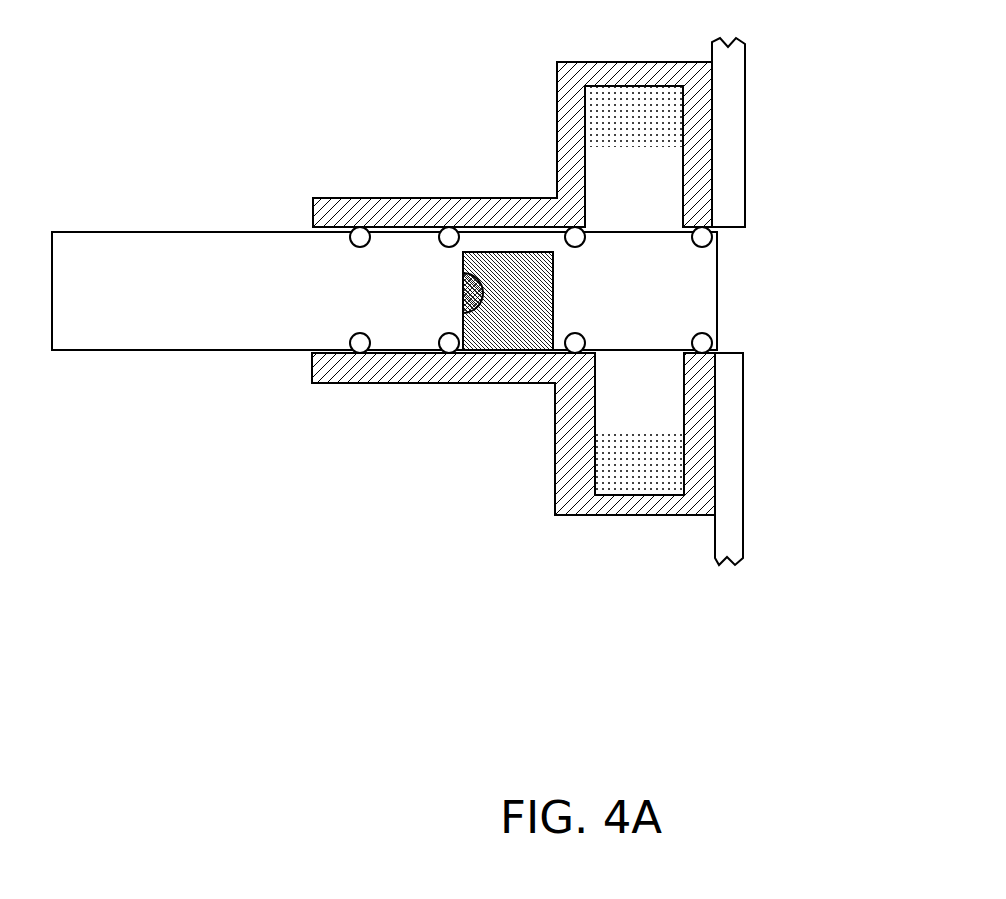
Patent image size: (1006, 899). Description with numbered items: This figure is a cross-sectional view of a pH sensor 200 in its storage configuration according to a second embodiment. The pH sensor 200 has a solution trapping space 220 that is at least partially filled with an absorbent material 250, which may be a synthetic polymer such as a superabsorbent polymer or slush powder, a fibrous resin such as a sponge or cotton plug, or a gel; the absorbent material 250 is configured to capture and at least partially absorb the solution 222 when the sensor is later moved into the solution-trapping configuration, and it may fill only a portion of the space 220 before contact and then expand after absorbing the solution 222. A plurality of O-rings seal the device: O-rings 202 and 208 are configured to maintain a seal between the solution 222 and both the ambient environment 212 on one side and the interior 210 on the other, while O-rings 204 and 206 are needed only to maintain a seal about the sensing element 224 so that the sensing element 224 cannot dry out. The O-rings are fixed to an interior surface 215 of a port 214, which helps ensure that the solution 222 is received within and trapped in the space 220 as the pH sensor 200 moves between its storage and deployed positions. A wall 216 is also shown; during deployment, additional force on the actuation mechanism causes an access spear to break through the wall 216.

The pH sensor 200 is at (384, 291).
The O-ring 202 is at (352, 340).
The O-ring 204 is at (441, 338).
The O-ring 206 is at (582, 244).
The O-ring 208 is at (709, 244).
The interior 210 is at (599, 157).
The ambient environment 212 is at (83, 399).
The port 214 is at (643, 508).
The interior surface 215 is at (382, 352).
The wall 216 is at (732, 154).
The solution trapping space 220 is at (652, 387).
The solution 222 is at (473, 340).
The sensing element 224 is at (473, 276).
The absorbent material 250 is at (635, 112).